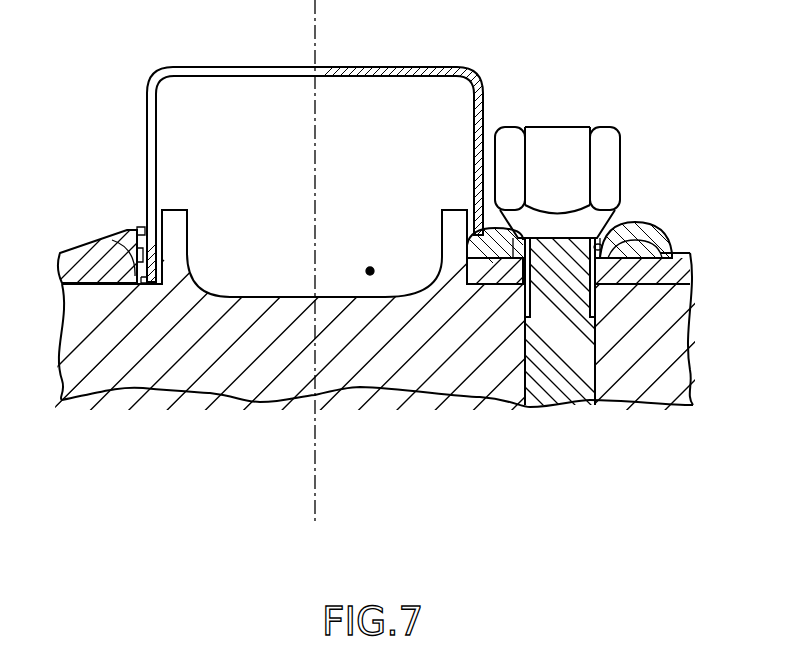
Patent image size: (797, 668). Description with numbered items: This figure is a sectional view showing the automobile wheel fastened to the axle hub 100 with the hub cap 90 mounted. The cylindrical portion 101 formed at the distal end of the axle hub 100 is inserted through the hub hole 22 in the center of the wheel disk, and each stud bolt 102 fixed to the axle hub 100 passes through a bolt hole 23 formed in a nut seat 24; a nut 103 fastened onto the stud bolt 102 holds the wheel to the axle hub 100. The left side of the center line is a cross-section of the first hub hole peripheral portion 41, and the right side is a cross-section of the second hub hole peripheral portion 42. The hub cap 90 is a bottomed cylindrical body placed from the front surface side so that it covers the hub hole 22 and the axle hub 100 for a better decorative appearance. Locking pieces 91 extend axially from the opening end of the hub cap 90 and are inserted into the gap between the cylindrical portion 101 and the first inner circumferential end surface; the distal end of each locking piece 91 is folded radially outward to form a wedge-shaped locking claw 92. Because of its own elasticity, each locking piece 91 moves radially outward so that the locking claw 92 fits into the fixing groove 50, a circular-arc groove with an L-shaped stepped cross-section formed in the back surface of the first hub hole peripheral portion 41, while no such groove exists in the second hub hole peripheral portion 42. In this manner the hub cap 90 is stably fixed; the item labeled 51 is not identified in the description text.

The hub hole 22 is at (370, 271).
The bolt hole 23 is at (602, 250).
The nut seat 24 is at (605, 236).
The first hub hole peripheral portion 41 is at (60, 253).
The second hub hole peripheral portion 42 is at (690, 258).
The fixing groove 50 is at (112, 240).
The clip 51 is at (141, 228).
The hub cap 90 is at (436, 67).
The locking piece 91 is at (150, 250).
The locking claw 92 is at (60, 344).
The axle hub 100 is at (692, 336).
The cylindrical portion 101 is at (442, 232).
The stud bolt 102 is at (652, 253).
The nut 103 is at (625, 170).